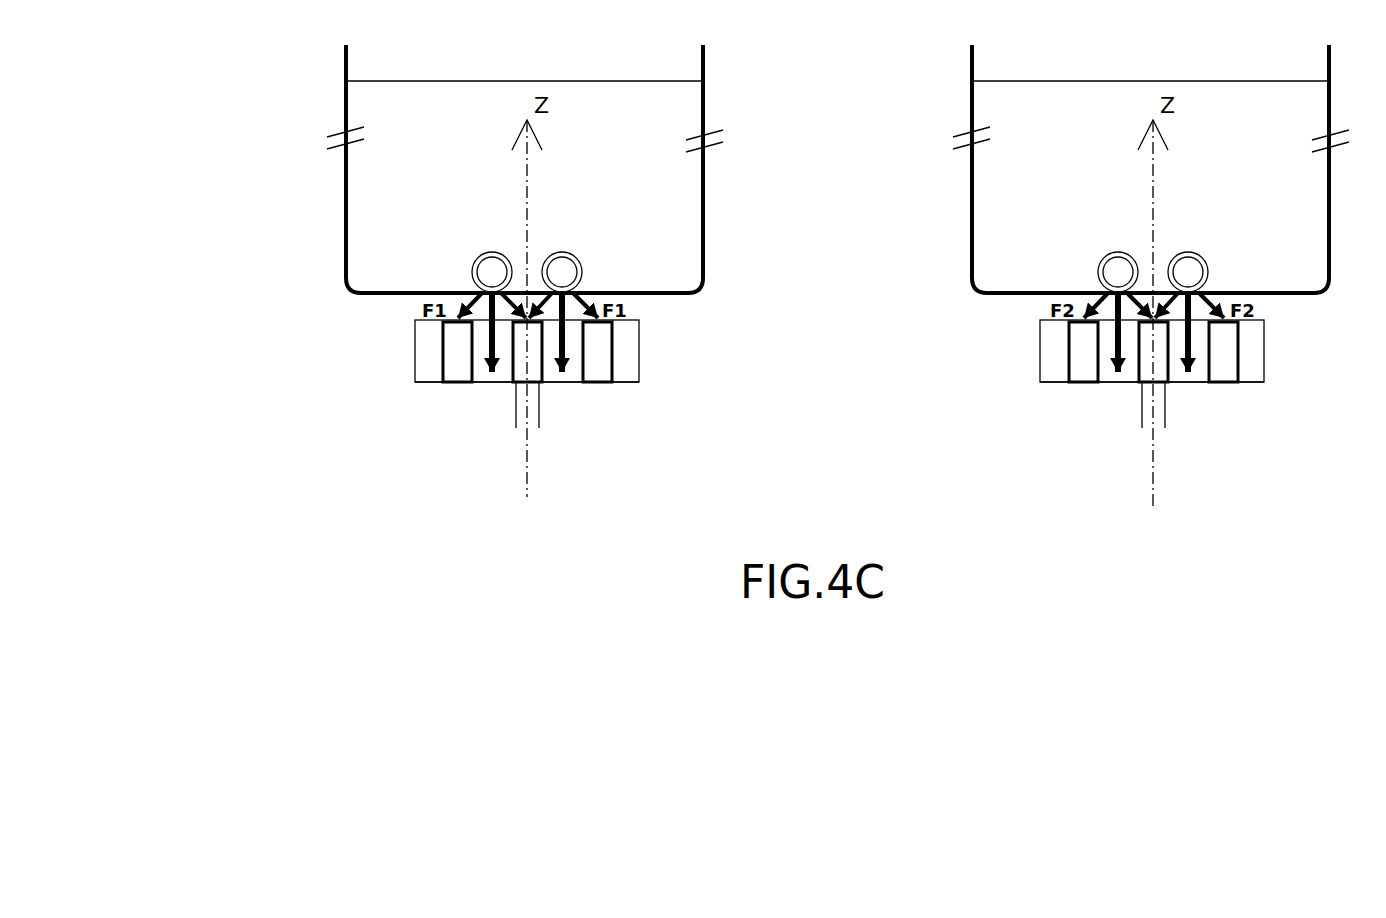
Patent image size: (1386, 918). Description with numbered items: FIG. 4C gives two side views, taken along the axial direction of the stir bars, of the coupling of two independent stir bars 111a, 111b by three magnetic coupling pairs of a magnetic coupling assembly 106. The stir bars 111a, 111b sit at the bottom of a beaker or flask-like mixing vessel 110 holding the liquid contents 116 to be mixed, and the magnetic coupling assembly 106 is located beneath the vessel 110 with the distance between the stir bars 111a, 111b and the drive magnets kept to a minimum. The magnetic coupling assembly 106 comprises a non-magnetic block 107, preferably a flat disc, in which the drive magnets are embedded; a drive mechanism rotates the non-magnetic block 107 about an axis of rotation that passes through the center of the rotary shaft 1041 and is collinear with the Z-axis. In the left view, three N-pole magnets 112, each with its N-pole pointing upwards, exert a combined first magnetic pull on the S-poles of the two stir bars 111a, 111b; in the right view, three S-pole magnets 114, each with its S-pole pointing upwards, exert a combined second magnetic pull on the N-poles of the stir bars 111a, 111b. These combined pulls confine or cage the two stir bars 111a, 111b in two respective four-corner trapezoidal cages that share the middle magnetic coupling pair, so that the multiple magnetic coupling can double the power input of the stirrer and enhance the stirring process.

The mixing vessel 110 is at (341, 57).
The liquid contents 116 is at (367, 183).
The stir bar 111a is at (492, 252).
The stir bar 111b is at (560, 250).
The N-pole magnet 112 is at (443, 333).
The S-pole magnet 114 is at (1069, 333).
The magnetic coupling assembly 106 is at (639, 350).
The non-magnetic block 107 is at (425, 370).
The rotary shaft 1041 is at (539, 412).